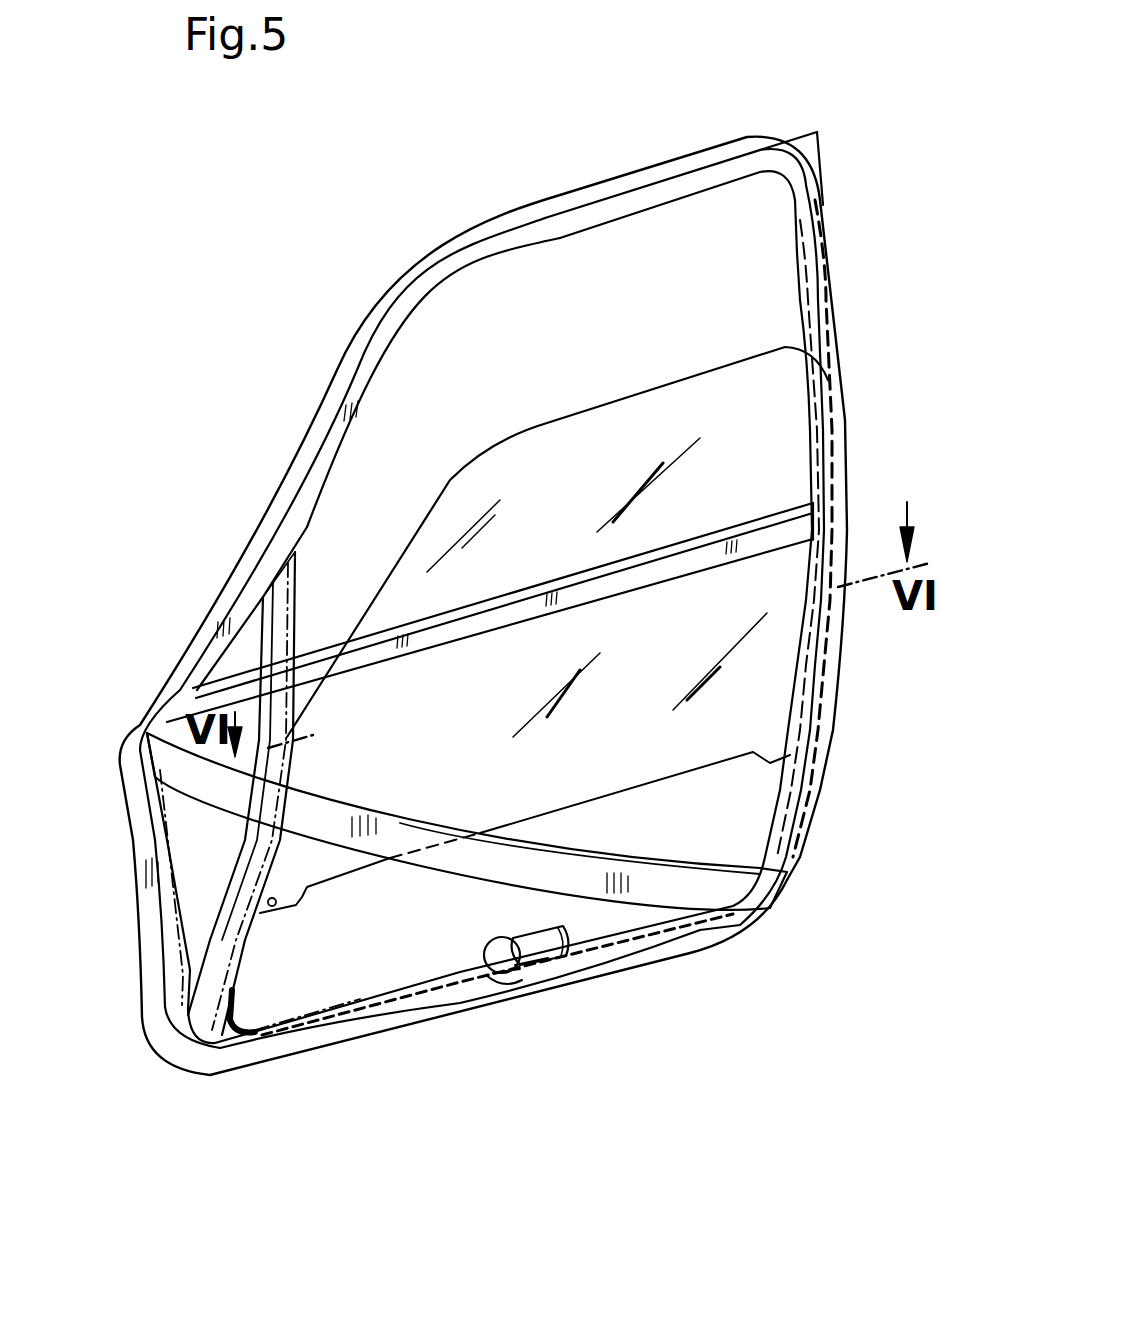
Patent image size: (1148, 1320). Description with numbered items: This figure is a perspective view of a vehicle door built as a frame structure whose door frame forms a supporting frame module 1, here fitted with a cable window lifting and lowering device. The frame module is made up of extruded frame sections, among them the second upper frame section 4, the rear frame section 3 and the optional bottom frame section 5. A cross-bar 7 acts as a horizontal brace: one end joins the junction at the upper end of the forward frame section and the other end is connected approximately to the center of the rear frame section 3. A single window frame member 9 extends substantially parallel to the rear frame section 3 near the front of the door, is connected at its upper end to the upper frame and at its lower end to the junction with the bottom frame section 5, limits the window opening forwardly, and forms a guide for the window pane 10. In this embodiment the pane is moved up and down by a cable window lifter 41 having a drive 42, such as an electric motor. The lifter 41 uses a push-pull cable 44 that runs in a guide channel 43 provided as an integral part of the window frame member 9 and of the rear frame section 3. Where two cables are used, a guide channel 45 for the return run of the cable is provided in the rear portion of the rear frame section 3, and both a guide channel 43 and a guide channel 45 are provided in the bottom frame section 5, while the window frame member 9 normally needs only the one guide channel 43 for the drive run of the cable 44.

The supporting frame module 1 is at (453, 228).
The rear frame section 3 is at (822, 299).
The second upper frame section 4 is at (643, 177).
The bottom frame section 5 is at (523, 983).
The cross-bar 7 is at (688, 565).
The window frame member 9 is at (282, 583).
The window pane 10 is at (383, 292).
The cable window lifter 41 is at (533, 936).
The drive 42 is at (557, 963).
The guide channel 43 is at (805, 690).
The push-pull cable 44 is at (368, 1012).
The guide channel for the return run 45 is at (812, 433).